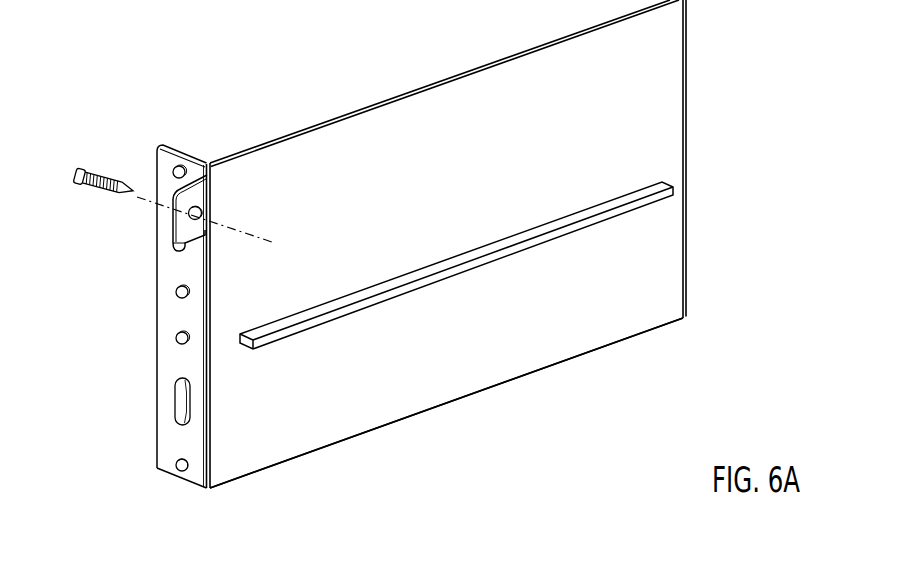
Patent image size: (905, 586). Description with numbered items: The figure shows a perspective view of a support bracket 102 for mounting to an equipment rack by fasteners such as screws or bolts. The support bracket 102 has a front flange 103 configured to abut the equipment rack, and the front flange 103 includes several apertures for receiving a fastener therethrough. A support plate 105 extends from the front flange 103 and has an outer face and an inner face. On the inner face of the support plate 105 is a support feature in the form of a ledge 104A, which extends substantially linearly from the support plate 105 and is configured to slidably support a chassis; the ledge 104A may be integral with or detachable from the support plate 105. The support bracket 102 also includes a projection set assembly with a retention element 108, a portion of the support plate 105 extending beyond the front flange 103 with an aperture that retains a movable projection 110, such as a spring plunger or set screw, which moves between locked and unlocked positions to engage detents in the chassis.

The support bracket 102 is at (352, 51).
The front flange 103 is at (166, 477).
The ledge 104A is at (348, 314).
The support plate 105 is at (483, 374).
The retention element 108 is at (190, 184).
The movable projection 110 is at (88, 164).